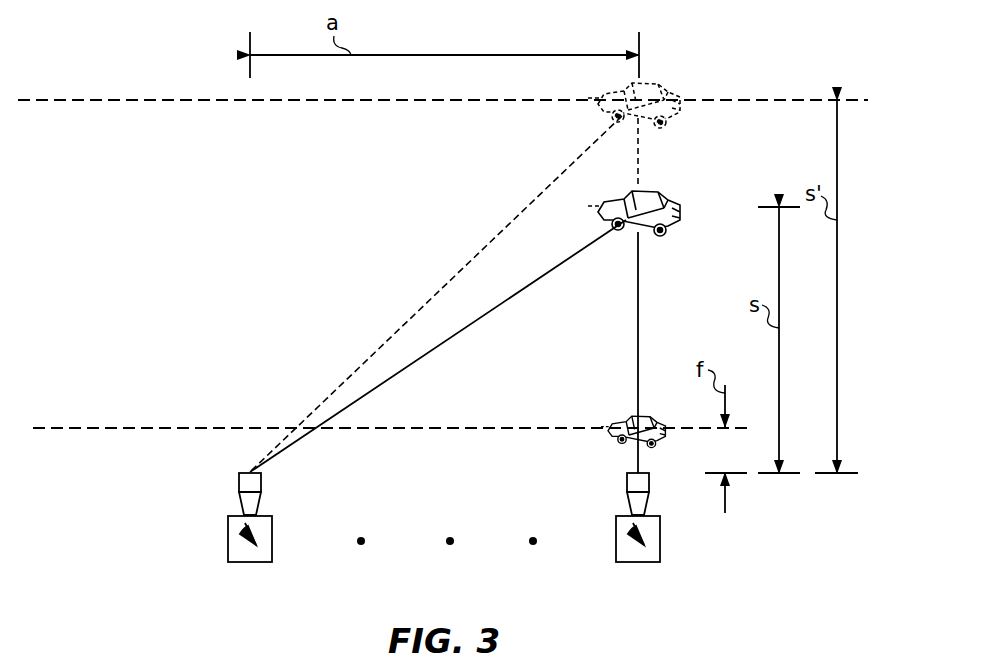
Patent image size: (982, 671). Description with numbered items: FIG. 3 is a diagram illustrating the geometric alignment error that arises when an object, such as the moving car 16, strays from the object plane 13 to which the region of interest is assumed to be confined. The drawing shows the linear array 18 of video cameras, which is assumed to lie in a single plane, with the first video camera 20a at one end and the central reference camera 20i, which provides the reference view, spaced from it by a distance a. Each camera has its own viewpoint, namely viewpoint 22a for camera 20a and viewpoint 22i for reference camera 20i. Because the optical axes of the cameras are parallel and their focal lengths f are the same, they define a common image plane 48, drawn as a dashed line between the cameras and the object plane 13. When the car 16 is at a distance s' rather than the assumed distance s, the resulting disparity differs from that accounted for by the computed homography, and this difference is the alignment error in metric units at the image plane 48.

The object plane 13 is at (120, 99).
The common image plane 48 is at (124, 427).
The dynamic element (car) 16 is at (668, 204).
The array of video cameras 18 is at (110, 557).
The video camera 20a is at (238, 527).
The viewpoint 22a is at (252, 522).
The reference video camera 20i is at (624, 527).
The viewpoint 22i is at (640, 522).